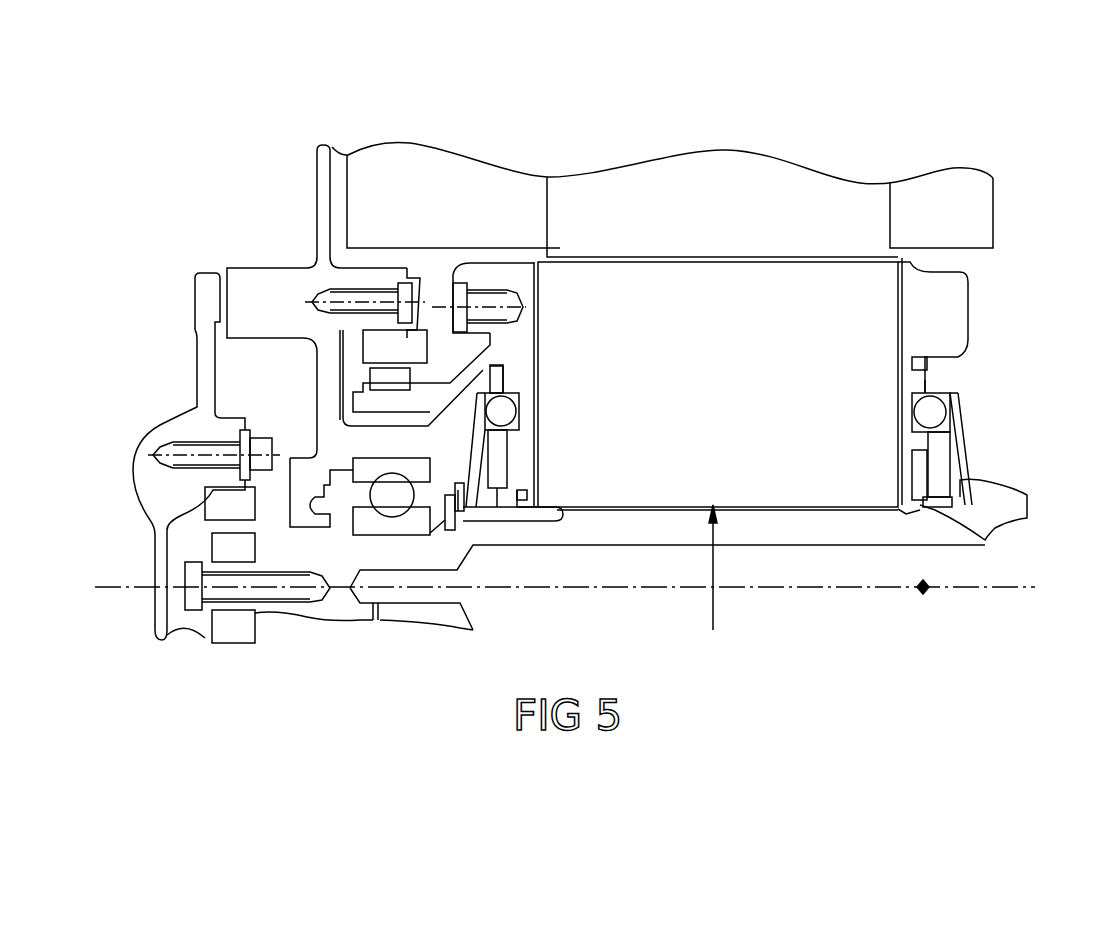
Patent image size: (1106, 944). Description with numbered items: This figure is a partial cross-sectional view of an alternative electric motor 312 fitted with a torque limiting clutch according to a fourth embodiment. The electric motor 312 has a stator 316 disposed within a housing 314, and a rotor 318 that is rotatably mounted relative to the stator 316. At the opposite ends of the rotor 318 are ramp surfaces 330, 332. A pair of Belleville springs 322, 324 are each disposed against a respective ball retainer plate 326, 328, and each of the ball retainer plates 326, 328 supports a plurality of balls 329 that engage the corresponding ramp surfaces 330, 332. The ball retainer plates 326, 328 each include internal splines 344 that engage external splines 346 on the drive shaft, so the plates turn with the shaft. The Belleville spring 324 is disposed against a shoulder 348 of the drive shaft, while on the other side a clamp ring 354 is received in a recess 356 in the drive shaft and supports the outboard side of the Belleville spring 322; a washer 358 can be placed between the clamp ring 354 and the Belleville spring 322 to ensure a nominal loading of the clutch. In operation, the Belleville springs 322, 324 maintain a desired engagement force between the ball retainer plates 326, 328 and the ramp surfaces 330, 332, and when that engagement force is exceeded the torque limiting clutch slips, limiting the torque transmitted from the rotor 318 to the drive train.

The electric motor 312 is at (980, 128).
The housing 314 is at (323, 199).
The stator 316 is at (818, 190).
The rotor 318 is at (855, 282).
The Belleville spring 322 is at (477, 442).
The Belleville spring 324 is at (960, 452).
The ball retainer plate 326 is at (497, 468).
The ball retainer plate 328 is at (938, 463).
The balls 329 is at (502, 400).
The ramp surface 330 is at (514, 410).
The ramp surface 332 is at (933, 405).
The internal splines 344 is at (500, 508).
The external splines 346 is at (543, 517).
The shoulder 348 is at (1027, 512).
The clamp ring 354 is at (447, 523).
The recess 356 is at (458, 490).
The washer 358 is at (463, 483).